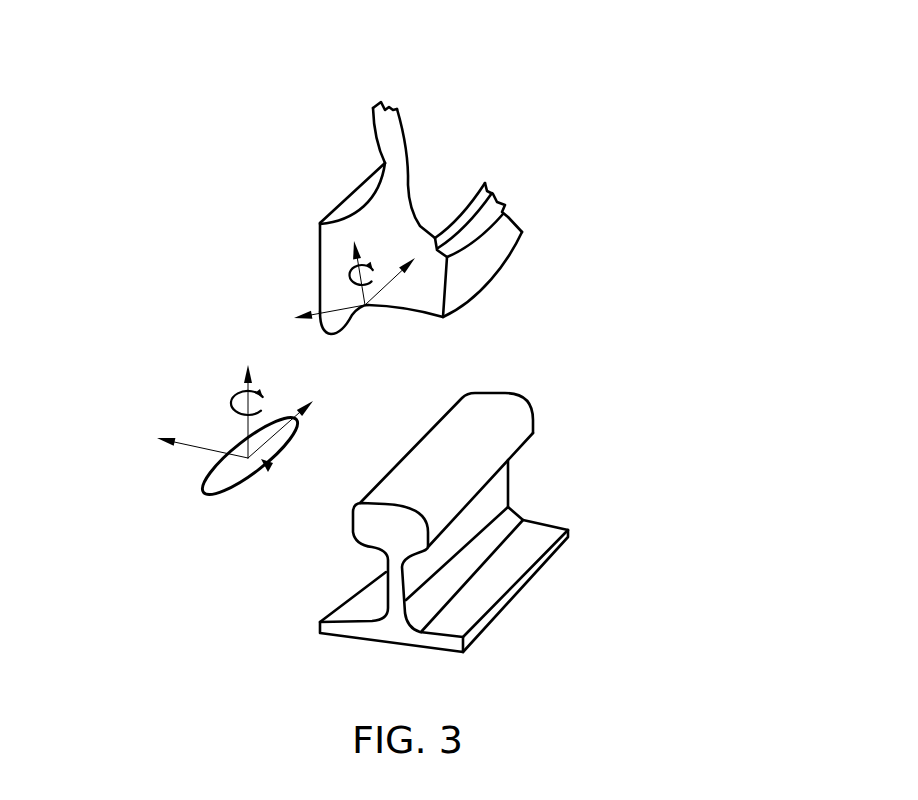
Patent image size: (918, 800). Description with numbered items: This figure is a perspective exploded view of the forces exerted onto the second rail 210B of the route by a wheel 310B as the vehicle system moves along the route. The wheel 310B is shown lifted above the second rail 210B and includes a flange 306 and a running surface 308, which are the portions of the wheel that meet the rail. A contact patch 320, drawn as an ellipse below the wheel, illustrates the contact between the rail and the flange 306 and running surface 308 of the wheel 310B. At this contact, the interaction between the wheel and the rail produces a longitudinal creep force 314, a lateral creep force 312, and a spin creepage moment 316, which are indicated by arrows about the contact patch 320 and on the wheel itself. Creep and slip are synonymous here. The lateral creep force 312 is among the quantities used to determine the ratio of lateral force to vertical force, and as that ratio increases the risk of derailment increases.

The wheel 310B is at (420, 197).
The flange 306 is at (332, 334).
The running surface 308 is at (403, 310).
The lateral creep force 312 is at (333, 310).
The longitudinal creep force 314 is at (393, 279).
The spin creepage moment 316 is at (356, 263).
The contact patch 320 is at (274, 468).
The second rail 210B is at (543, 472).